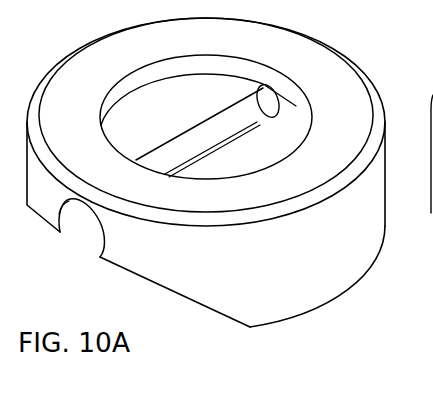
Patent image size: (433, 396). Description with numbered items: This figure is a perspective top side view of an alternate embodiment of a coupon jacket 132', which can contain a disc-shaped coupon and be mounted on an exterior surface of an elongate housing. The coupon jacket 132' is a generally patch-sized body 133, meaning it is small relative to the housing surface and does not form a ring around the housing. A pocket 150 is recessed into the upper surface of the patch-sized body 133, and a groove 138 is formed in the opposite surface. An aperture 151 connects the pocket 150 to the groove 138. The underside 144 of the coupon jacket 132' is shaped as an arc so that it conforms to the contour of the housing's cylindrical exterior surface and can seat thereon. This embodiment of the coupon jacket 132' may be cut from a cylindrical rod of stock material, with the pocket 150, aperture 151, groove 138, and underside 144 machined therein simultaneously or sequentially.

The patch-sized body 133 is at (290, 274).
The coupon jacket 132' is at (317, 285).
The groove 138 is at (83, 213).
The underside 144 is at (185, 303).
The pocket 150 is at (236, 117).
The aperture 151 is at (190, 128).